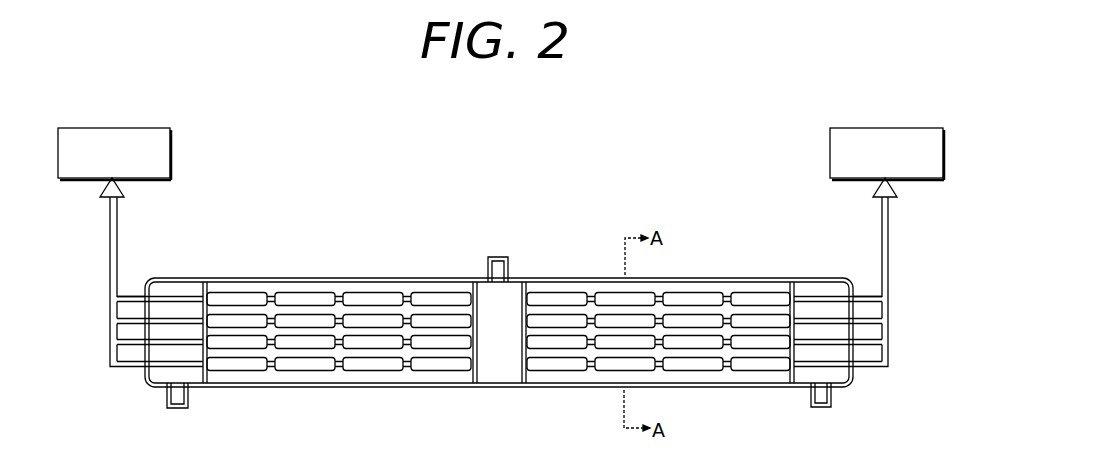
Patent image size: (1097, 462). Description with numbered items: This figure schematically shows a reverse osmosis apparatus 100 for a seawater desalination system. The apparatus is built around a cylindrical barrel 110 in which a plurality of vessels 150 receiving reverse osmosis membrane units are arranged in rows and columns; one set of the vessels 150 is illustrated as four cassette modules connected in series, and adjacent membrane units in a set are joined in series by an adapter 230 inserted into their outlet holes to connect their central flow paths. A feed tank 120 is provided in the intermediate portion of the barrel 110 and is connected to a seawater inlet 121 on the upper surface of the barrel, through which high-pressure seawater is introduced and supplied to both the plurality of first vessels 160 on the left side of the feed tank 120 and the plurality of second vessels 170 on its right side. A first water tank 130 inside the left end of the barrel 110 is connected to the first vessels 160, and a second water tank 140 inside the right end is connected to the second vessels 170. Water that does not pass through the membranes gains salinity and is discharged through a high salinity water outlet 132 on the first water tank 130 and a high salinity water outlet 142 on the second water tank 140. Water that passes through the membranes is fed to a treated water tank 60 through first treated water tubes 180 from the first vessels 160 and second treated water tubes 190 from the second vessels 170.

The treated water tank 60 is at (110, 127).
The reverse osmosis apparatus 100 is at (347, 200).
The barrel 110 is at (583, 268).
The feed tank 120 is at (495, 293).
The seawater inlet 121 is at (512, 263).
The first water tank 130 is at (178, 278).
The high salinity water outlet 132 is at (188, 396).
The second water tank 140 is at (818, 277).
The high salinity water outlet 142 is at (810, 398).
The vessels 150 is at (498, 338).
The first vessels 160 is at (305, 292).
The second vessels 170 is at (707, 292).
The first treated water tubes 180 is at (118, 212).
The second treated water tubes 190 is at (882, 212).
The adapter 230 is at (406, 293).